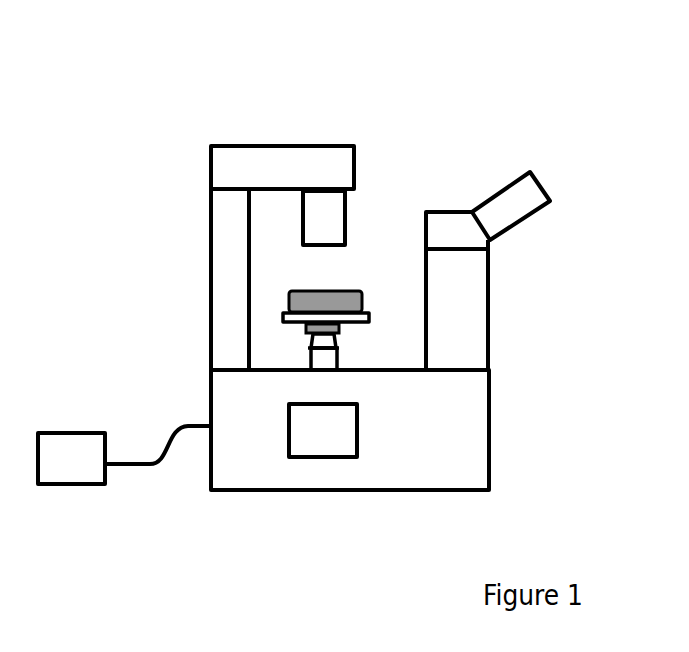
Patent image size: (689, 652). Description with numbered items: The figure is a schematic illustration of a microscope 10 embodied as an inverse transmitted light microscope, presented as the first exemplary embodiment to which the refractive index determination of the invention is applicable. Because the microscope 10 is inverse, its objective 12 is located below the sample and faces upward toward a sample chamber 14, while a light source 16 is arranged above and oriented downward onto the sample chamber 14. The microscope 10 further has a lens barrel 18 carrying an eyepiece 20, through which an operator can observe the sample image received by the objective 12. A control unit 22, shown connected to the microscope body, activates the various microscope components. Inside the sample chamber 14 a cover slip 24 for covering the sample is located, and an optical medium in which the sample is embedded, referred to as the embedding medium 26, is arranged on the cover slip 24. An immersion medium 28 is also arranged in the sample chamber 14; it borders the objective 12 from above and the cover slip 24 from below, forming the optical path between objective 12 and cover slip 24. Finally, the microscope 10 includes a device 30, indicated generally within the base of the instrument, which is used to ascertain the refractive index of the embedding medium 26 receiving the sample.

The microscope 10 is at (161, 102).
The objective 12 is at (303, 347).
The sample chamber 14 is at (353, 276).
The light source 16 is at (356, 170).
The lens barrel 18 is at (500, 257).
The eyepiece 20 is at (538, 180).
The control unit 22 is at (124, 455).
The cover slip 24 is at (275, 316).
The embedding medium 26 is at (287, 287).
The immersion medium 28 is at (342, 328).
The device for ascertaining the refractive index 30 is at (323, 430).